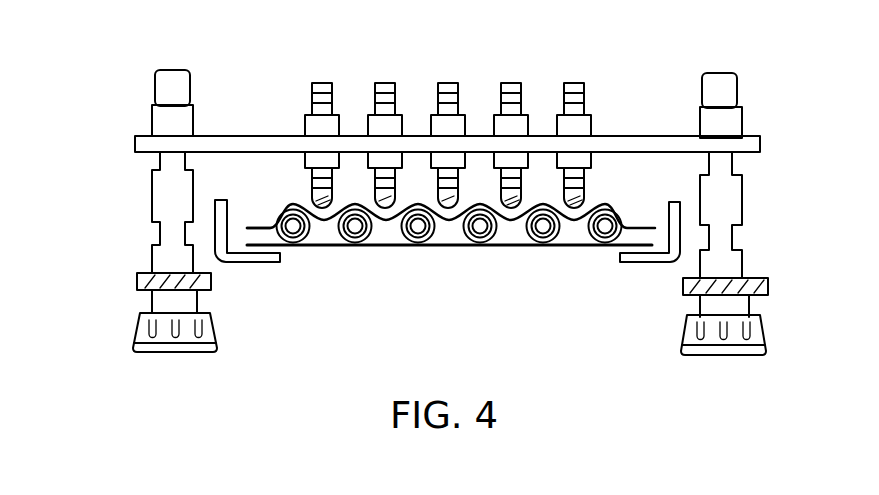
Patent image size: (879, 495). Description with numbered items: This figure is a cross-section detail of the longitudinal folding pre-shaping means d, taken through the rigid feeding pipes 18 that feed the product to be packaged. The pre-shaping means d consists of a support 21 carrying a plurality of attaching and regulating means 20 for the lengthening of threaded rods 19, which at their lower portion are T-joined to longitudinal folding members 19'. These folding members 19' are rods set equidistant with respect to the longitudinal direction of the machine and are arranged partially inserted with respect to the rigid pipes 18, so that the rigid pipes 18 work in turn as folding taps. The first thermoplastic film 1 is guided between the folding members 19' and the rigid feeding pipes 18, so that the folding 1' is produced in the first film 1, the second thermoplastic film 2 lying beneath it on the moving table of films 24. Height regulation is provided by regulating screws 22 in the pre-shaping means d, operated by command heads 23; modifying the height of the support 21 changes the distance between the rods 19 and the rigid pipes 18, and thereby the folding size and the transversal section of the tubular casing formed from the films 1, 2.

The first thermoplastic film 1 is at (455, 192).
The transversal folding 1' is at (261, 192).
The second thermoplastic film 2 is at (465, 246).
The rigid feeding pipes 18 is at (416, 242).
The rods 19 is at (448, 106).
The longitudinal folding members 19' is at (430, 262).
The attaching and regulating means 20 is at (308, 118).
The support 21 is at (135, 142).
The regulating screws 22 is at (168, 160).
The command heads 23 is at (140, 325).
The moving table of films 24 is at (256, 263).
The longitudinal folding pre-shaping means d is at (653, 113).